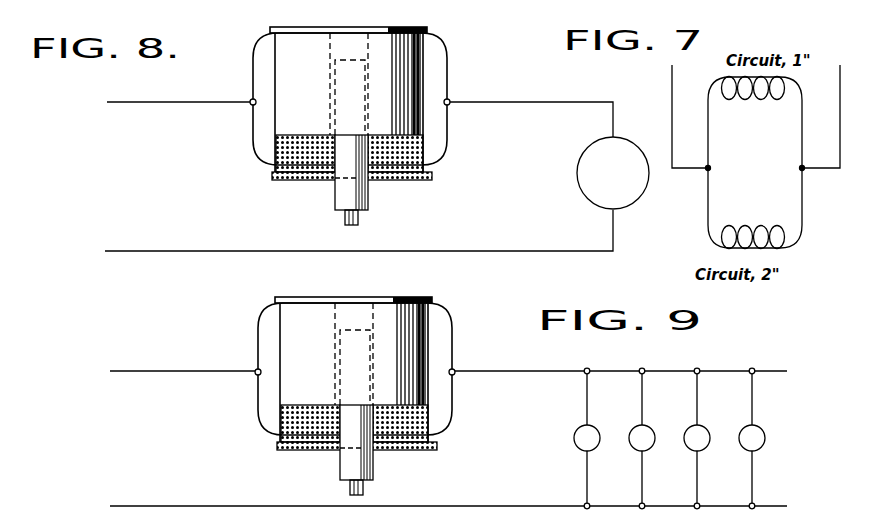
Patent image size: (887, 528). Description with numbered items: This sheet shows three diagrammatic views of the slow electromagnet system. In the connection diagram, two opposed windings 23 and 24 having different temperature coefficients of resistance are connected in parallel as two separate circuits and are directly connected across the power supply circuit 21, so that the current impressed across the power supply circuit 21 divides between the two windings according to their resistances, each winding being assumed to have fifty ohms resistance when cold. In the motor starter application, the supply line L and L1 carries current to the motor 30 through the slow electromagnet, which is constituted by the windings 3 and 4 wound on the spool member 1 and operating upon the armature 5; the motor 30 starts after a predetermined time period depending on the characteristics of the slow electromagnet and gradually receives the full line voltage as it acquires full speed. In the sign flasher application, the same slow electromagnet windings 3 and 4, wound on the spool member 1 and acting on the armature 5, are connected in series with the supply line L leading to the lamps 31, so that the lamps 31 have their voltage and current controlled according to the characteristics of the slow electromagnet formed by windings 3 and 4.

In FIG. 8, the spool member 1 is at (288, 27).
In FIG. 9, the spool member 1 is at (353, 283).
In FIG. 8, the winding 3 is at (248, 126).
In FIG. 9, the winding 3 is at (334, 376).
In FIG. 8, the winding 4 is at (447, 127).
In FIG. 9, the winding 4 is at (383, 369).
In FIG. 8, the armature 5 is at (355, 200).
In FIG. 9, the armature 5 is at (373, 450).
In FIG. 8, the supply line L is at (157, 104).
In FIG. 9, the supply line L is at (143, 374).
In FIG. 8, the supply line L1 is at (140, 250).
In FIG. 8, the motor 30 is at (628, 166).
In FIG. 7, the power supply circuit 21 is at (672, 87).
In FIG. 7, the winding 23 is at (745, 104).
In FIG. 7, the winding 24 is at (745, 228).
In FIG. 9, the lamps 31 is at (642, 438).